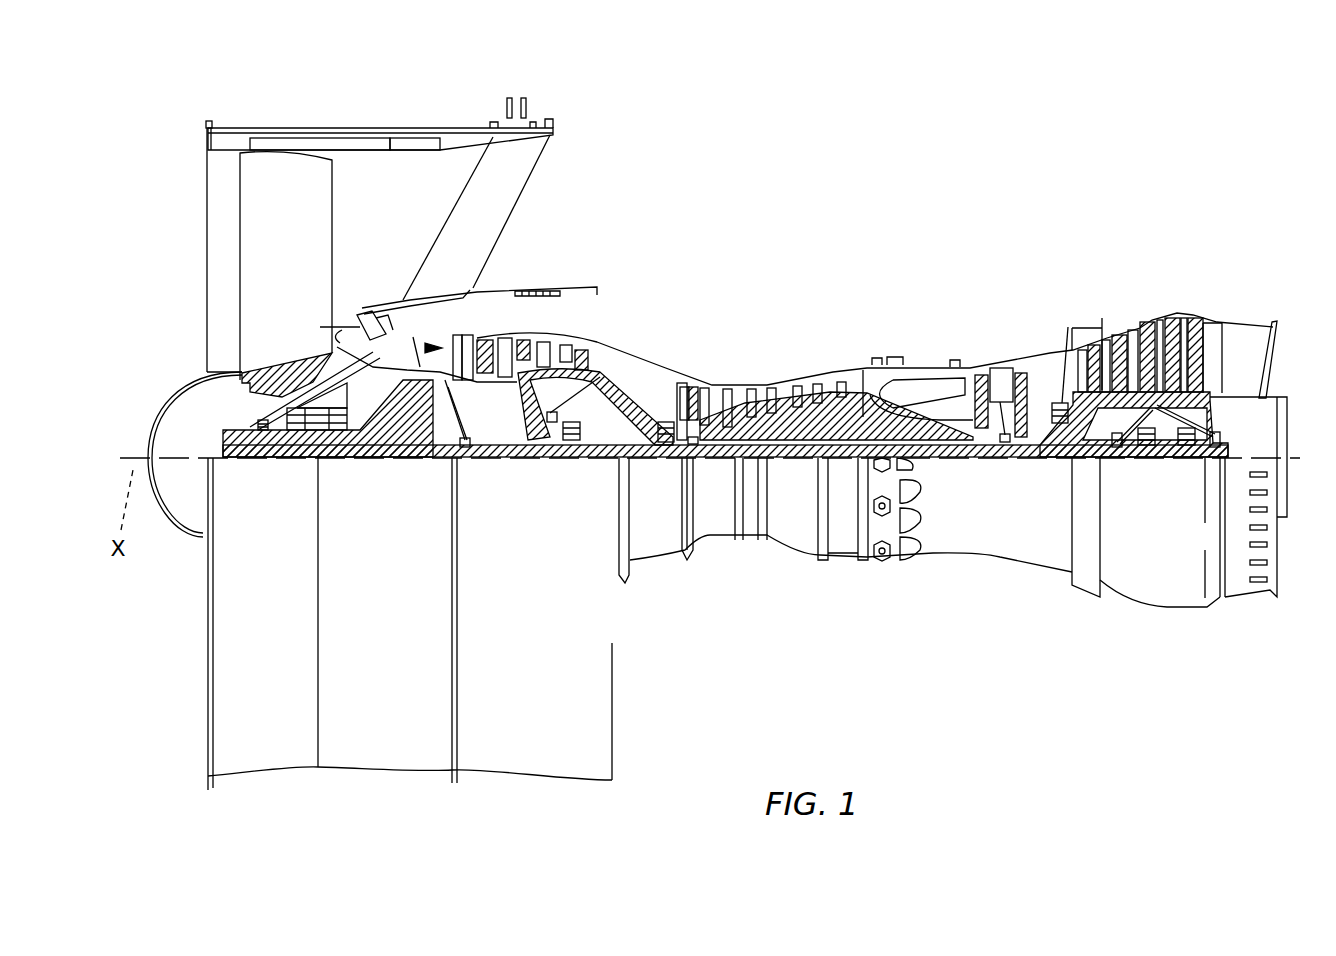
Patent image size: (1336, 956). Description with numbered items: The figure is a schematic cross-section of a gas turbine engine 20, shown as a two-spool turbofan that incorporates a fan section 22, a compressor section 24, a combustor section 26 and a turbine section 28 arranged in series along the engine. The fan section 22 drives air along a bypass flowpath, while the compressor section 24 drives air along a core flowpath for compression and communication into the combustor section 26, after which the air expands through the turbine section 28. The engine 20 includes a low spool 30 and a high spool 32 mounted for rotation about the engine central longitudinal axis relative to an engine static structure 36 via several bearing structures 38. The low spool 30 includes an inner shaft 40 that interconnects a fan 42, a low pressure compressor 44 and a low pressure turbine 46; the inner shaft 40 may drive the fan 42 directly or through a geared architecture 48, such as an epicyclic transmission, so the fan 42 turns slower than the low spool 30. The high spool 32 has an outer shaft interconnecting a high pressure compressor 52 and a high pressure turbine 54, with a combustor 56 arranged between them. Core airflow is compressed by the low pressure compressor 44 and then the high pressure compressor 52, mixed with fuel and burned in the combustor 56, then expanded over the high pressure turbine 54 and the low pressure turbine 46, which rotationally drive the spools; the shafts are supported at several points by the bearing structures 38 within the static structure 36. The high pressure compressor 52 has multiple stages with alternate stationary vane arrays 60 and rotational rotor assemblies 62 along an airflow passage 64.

The gas turbine engine 20 is at (1044, 178).
The fan section 22 is at (200, 108).
The compressor section 24 is at (470, 248).
The combustor section 26 is at (870, 248).
The turbine section 28 is at (1213, 248).
The low spool 30 is at (797, 458).
The high spool 32 is at (838, 420).
The engine static structure 36 is at (847, 553).
The bearing structures 38 is at (992, 318).
The inner shaft 40 is at (645, 456).
The fan 42 is at (263, 274).
The low pressure compressor 44 is at (545, 347).
The low pressure turbine 46 is at (1147, 320).
The geared architecture 48 is at (413, 433).
The high pressure compressor 52 is at (777, 420).
The high pressure turbine 54 is at (1000, 367).
The combustor 56 is at (925, 397).
The stationary vane arrays 60 is at (503, 340).
The rotational rotor assemblies 62 is at (527, 345).
The airflow passage 64 is at (345, 320).